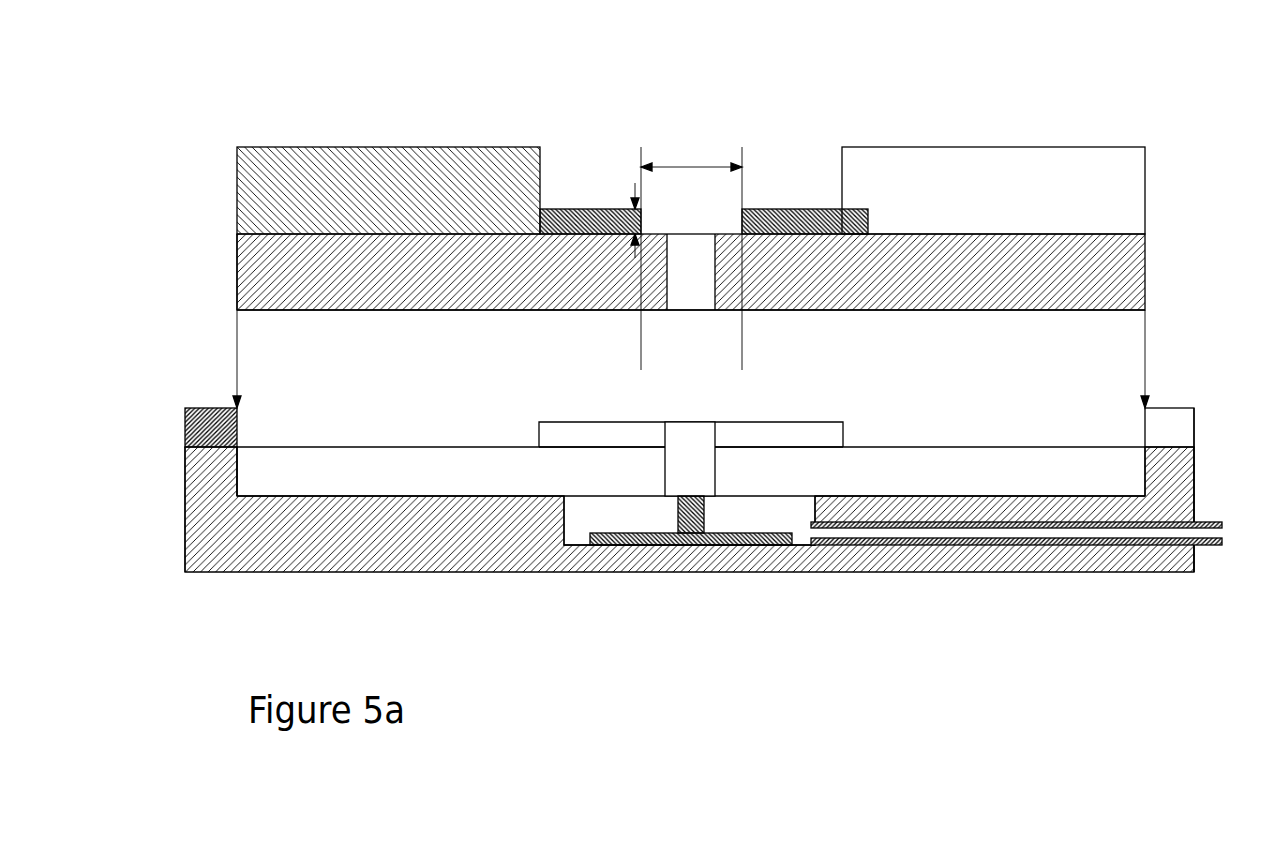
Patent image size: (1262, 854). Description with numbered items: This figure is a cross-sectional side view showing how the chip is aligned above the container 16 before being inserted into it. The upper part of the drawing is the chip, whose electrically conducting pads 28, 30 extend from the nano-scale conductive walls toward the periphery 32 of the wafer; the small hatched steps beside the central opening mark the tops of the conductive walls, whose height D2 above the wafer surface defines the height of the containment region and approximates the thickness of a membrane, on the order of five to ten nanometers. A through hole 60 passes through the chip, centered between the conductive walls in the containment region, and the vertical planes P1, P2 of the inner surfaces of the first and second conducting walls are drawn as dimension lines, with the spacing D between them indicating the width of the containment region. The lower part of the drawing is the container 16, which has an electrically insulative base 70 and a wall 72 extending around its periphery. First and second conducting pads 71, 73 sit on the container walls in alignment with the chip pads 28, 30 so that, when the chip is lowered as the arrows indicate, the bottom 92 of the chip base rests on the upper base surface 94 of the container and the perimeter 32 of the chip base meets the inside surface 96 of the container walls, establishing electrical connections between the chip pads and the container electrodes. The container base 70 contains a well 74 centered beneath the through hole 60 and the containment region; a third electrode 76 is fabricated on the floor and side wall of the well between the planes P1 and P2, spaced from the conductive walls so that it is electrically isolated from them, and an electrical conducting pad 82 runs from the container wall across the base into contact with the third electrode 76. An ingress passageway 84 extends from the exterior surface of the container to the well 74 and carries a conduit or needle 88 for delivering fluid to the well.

The container 16 is at (1169, 268).
The electrically conducting pad 28 is at (437, 197).
The electrically conducting pad 30 is at (1045, 197).
The periphery of the wafer 32 is at (237, 273).
The through hole 60 is at (712, 280).
The bottom of the chip base 92 is at (973, 308).
The container base 70 is at (483, 532).
The first conducting pad 71 is at (240, 422).
The container wall 72 is at (205, 483).
The second conducting pad 73 is at (1170, 430).
The well 74 is at (565, 514).
The third electrode 76 is at (686, 545).
The electrical conducting pad 82 is at (693, 442).
The ingress passageway 84 is at (993, 538).
The conduit or needle 88 is at (1208, 468).
The upper base surface 94 is at (418, 495).
The inside surface of the container walls 96 is at (240, 465).
The plane of the inner surface of the first conducting wall P1 is at (642, 190).
The plane of the surface of the second conducting wall P2 is at (741, 190).
The distance D is at (691, 159).
The height of the containment region D2 is at (651, 220).